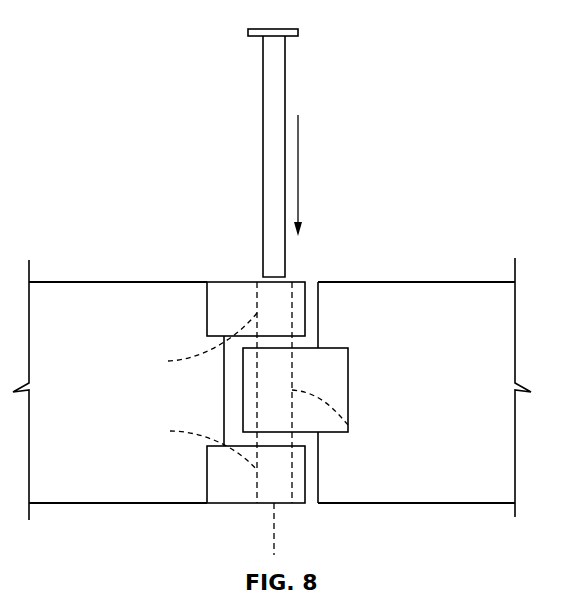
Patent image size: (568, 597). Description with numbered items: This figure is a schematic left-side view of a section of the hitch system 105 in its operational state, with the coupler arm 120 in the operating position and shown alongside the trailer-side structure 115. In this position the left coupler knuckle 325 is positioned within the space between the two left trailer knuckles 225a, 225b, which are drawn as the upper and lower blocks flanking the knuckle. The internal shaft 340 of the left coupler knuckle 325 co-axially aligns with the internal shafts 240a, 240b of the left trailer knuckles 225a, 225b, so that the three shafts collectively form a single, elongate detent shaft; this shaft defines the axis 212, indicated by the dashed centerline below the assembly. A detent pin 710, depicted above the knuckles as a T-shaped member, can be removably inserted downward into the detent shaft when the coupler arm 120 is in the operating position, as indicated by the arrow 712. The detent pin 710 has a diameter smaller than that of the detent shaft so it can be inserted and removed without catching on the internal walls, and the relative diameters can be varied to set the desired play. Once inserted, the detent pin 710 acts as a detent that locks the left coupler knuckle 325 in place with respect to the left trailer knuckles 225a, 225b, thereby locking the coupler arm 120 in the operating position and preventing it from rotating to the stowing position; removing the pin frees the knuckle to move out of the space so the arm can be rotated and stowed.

The hitch system 105 is at (138, 47).
The detent pin 710 is at (276, 88).
The arrow 712 is at (300, 176).
The first panel 115 is at (148, 292).
The coupler arm 120 is at (421, 290).
The left trailer knuckle 225a is at (220, 302).
The left trailer knuckle 225b is at (220, 470).
The internal shaft 240a is at (186, 343).
The internal shaft 240b is at (188, 444).
The left coupler knuckle 325 is at (338, 391).
The internal shaft 340 is at (348, 425).
The axis 212 is at (275, 533).